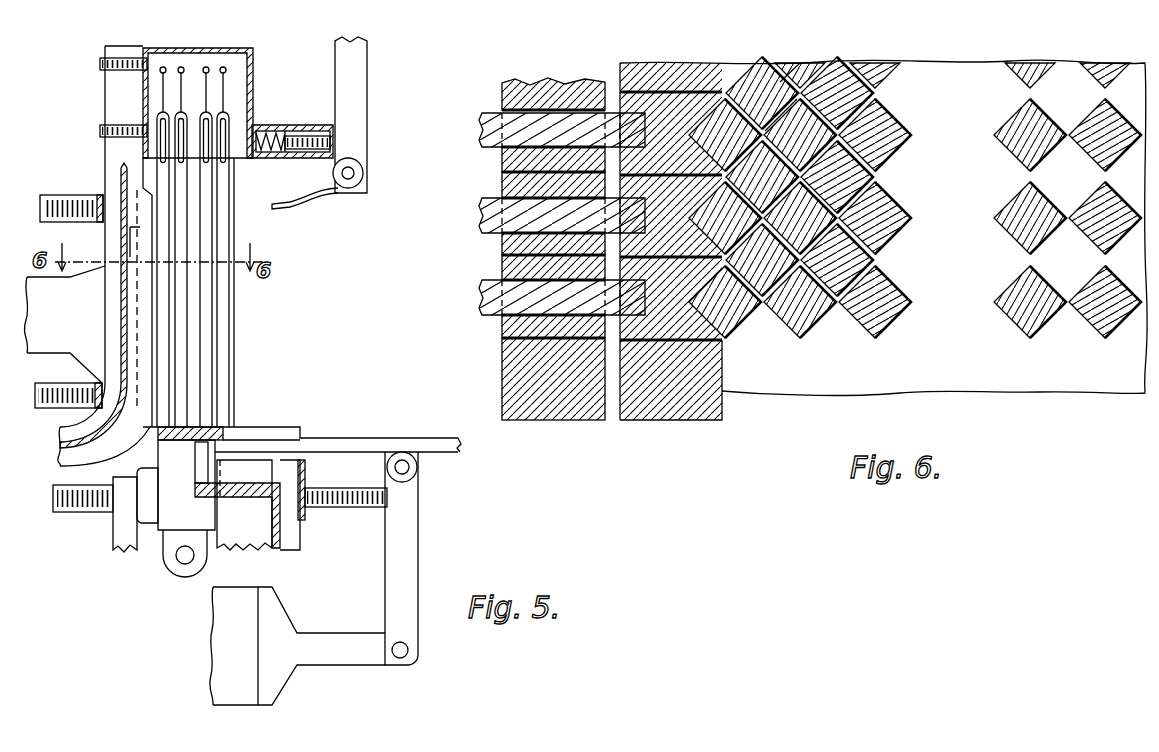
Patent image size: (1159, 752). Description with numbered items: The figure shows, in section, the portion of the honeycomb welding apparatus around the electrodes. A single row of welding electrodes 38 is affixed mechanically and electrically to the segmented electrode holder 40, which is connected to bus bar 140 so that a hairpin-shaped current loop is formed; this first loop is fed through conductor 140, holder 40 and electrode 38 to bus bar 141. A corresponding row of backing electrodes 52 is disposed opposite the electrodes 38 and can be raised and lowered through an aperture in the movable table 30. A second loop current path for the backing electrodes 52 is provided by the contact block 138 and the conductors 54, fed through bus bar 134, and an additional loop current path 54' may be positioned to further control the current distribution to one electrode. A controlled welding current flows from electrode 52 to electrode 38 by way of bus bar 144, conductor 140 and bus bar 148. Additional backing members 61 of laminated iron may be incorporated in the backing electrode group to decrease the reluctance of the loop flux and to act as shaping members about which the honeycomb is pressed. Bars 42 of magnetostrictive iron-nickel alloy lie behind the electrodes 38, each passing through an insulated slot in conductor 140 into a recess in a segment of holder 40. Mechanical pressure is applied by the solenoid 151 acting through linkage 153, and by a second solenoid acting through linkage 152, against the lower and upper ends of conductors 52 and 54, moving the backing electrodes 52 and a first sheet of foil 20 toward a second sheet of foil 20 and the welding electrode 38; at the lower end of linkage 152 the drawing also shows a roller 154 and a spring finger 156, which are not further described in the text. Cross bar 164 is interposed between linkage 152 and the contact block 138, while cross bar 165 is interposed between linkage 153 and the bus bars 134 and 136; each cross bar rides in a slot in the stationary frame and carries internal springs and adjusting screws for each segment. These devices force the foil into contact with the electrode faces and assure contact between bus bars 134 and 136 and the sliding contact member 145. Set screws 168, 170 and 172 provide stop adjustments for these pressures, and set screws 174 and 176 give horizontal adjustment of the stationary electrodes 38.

In FIG. 5, the contact block 138 is at (233, 48).
In FIG. 5, the set screw 168 is at (100, 63).
In FIG. 5, the set screw 170 is at (100, 128).
In FIG. 5, the bus bar 140 is at (105, 160).
In FIG. 6, the bus bar 140 is at (502, 163).
In FIG. 5, the set screw 174 is at (42, 196).
In FIG. 5, the linkage 152 is at (357, 80).
In FIG. 5, the cross bar 164 is at (271, 133).
In FIG. 5, the roller 154 is at (367, 174).
In FIG. 5, the spring finger 156 is at (326, 198).
In FIG. 5, the backing electrode 52 is at (163, 173).
In FIG. 6, the backing electrode 52 is at (812, 122).
In FIG. 5, the conductor 54 is at (216, 292).
In FIG. 6, the conductor 54 is at (1019, 208).
In FIG. 5, the additional loop current path 54' is at (217, 292).
In FIG. 6, the additional loop current path 54' is at (971, 210).
In FIG. 5, the welding electrode 38 is at (135, 313).
In FIG. 6, the welding electrode 38 is at (717, 124).
In FIG. 5, the magnetostrictive bar 42 is at (62, 356).
In FIG. 6, the magnetostrictive bar 42 is at (480, 126).
In FIG. 5, the set screw 176 is at (63, 430).
In FIG. 5, the bus bar 148 is at (82, 449).
In FIG. 5, the bus bar 141 is at (78, 464).
In FIG. 5, the set screw 172 is at (53, 508).
In FIG. 5, the bus bar 144 is at (117, 539).
In FIG. 5, the sliding contact member 145 is at (168, 517).
In FIG. 5, the bus bar 134 is at (263, 536).
In FIG. 5, the bus bar 136 is at (292, 544).
In FIG. 5, the cross bar 165 is at (361, 514).
In FIG. 5, the linkage 153 is at (413, 556).
In FIG. 5, the solenoid 151 is at (277, 632).
In FIG. 5, the movable table 30 is at (345, 425).
In FIG. 6, the movable table 30 is at (1023, 374).
In FIG. 6, the segmented electrode holder 40 is at (630, 74).
In FIG. 6, the sheet of foil 20 is at (776, 76).
In FIG. 6, the backing member 61 is at (783, 84).